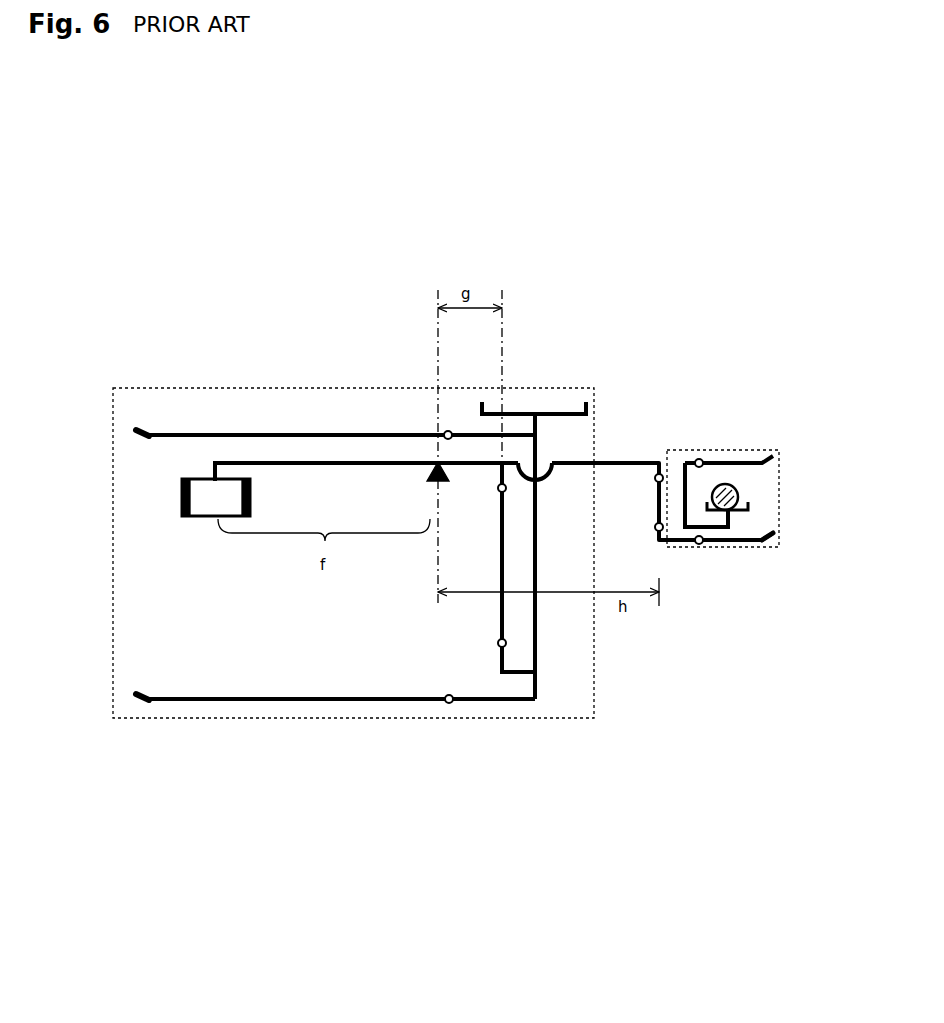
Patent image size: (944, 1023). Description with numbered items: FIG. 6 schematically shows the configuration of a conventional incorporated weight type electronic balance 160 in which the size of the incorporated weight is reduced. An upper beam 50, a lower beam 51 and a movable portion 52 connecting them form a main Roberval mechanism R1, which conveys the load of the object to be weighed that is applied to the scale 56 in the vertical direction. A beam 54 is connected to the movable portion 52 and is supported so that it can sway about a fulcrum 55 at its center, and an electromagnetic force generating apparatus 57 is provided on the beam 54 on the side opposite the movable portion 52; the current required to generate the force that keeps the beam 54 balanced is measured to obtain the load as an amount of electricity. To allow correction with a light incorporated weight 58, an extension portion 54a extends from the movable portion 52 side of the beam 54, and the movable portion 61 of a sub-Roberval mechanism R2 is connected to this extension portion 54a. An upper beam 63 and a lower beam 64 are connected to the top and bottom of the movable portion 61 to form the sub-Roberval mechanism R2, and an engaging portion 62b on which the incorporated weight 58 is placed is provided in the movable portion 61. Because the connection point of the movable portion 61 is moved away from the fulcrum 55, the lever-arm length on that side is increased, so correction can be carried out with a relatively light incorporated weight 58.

The electronic balance 160 is at (474, 211).
The upper beam 50 is at (224, 435).
The lower beam 51 is at (290, 700).
The movable portion 52 is at (538, 628).
The beam 54 is at (336, 463).
The extension portion 54a is at (604, 462).
The fulcrum 55 is at (435, 461).
The scale 56 is at (550, 412).
The electromagnetic force generating apparatus 57 is at (215, 497).
The incorporated weight 58 is at (722, 460).
The movable portion 61 is at (683, 462).
The engaging portion 62b is at (755, 545).
The upper beam 63 is at (745, 462).
The lower beam 64 is at (728, 545).
The main Roberval mechanism R1 is at (387, 718).
The sub-Roberval mechanism R2 is at (783, 505).